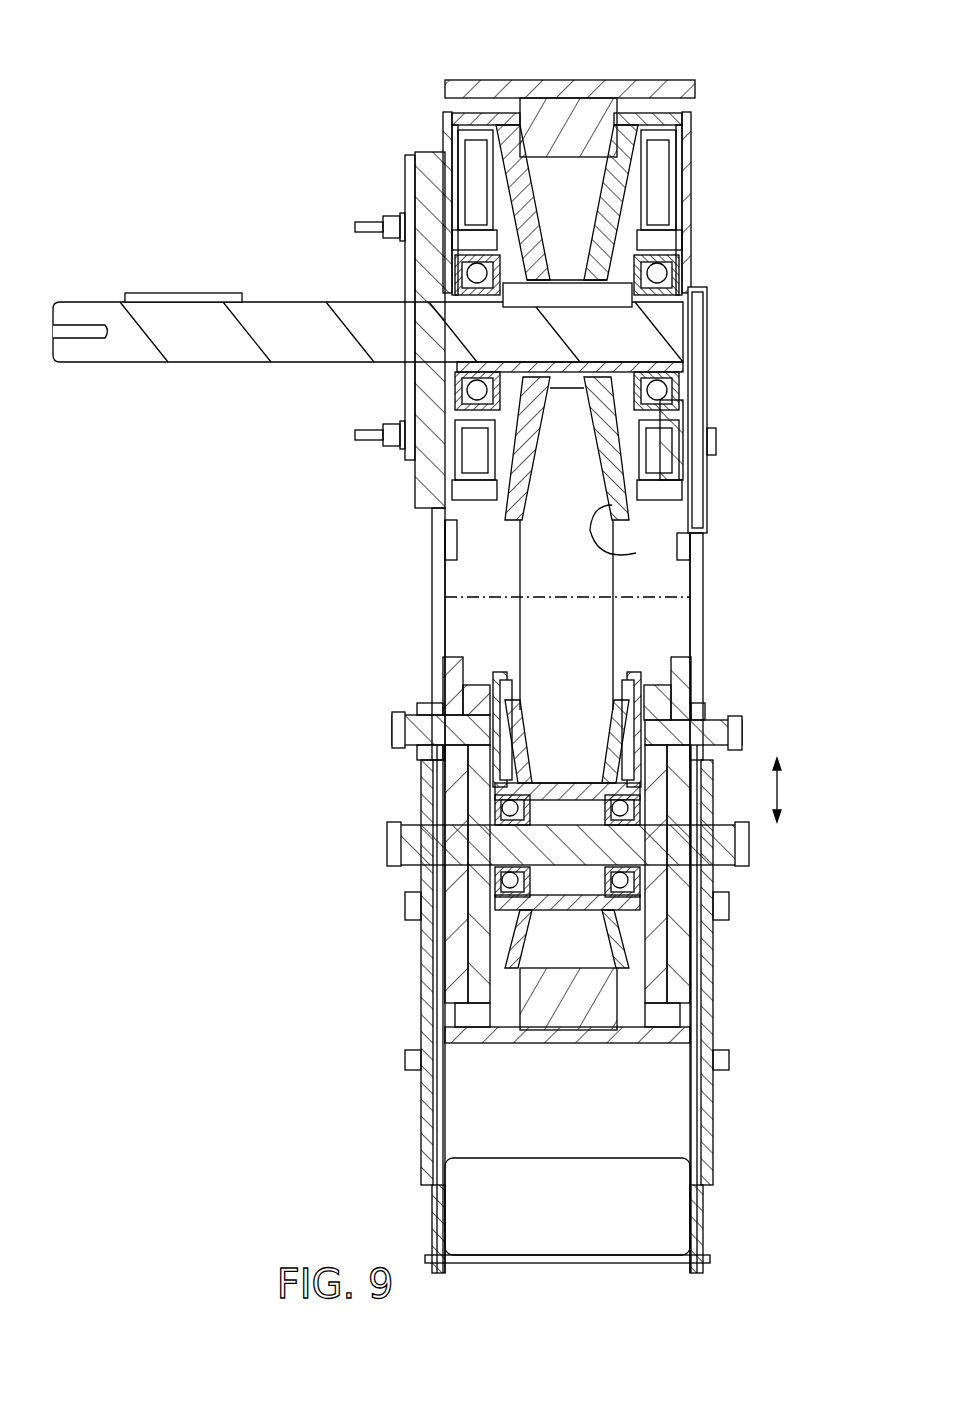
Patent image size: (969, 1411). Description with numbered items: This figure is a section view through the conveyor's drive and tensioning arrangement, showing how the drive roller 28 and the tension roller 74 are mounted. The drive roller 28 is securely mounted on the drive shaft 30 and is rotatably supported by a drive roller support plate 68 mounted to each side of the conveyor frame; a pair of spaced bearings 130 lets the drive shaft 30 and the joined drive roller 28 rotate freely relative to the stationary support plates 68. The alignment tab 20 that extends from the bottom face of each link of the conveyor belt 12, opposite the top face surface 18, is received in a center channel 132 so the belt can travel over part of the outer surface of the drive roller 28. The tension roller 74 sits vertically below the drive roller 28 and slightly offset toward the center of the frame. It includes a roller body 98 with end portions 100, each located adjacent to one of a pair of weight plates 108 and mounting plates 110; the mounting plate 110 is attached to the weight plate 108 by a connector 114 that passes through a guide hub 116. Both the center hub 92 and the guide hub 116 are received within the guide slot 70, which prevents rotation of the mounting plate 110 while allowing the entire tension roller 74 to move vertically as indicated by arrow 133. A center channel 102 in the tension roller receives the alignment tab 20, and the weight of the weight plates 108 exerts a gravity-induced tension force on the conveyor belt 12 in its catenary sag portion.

The conveyor belt 12 is at (605, 98).
The top face surface 18 is at (548, 80).
The alignment tab 20 is at (573, 155).
The drive roller 28 is at (605, 240).
The drive shaft 30 is at (288, 345).
The drive roller support plate 68 is at (450, 143).
The guide slot 70 is at (700, 660).
The tension roller 74 is at (697, 625).
The center hub 92 is at (430, 862).
The roller body 98 is at (525, 752).
The end portions 100 is at (497, 672).
The center channel 102 is at (540, 700).
The weight plate 108 is at (478, 705).
The mounting plate 110 is at (462, 700).
The connector 114 is at (415, 755).
The guide hub 116 is at (425, 710).
The bearings 130 is at (450, 262).
The center channel 132 is at (634, 553).
The arrow 133 is at (782, 794).